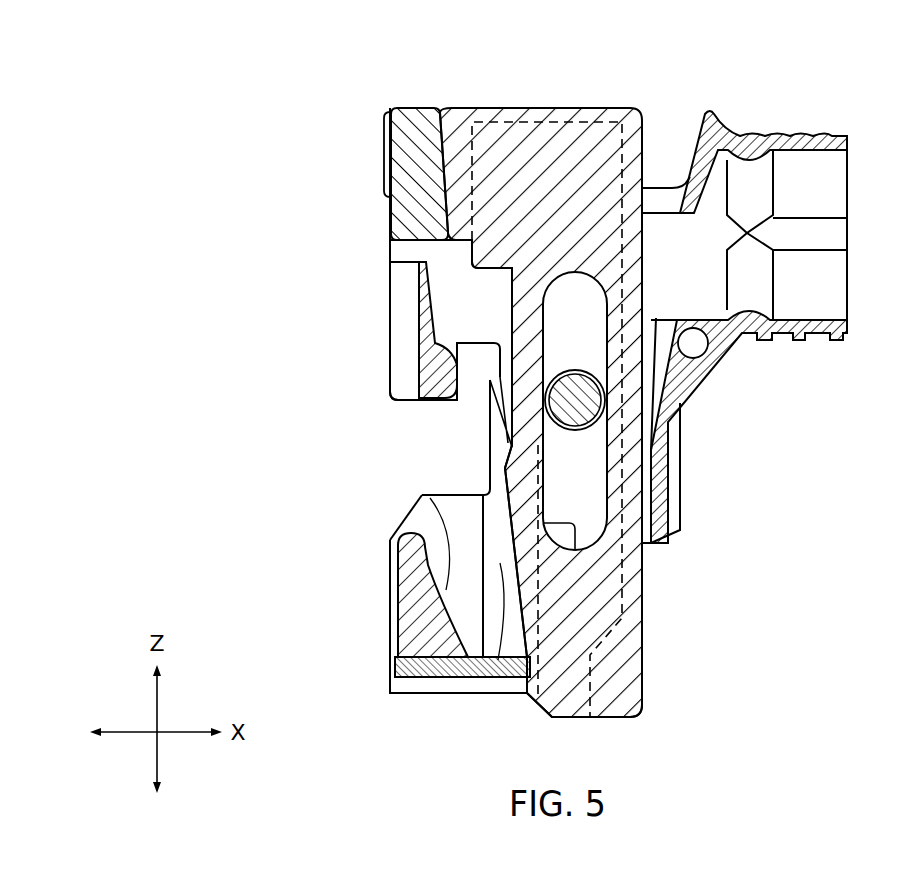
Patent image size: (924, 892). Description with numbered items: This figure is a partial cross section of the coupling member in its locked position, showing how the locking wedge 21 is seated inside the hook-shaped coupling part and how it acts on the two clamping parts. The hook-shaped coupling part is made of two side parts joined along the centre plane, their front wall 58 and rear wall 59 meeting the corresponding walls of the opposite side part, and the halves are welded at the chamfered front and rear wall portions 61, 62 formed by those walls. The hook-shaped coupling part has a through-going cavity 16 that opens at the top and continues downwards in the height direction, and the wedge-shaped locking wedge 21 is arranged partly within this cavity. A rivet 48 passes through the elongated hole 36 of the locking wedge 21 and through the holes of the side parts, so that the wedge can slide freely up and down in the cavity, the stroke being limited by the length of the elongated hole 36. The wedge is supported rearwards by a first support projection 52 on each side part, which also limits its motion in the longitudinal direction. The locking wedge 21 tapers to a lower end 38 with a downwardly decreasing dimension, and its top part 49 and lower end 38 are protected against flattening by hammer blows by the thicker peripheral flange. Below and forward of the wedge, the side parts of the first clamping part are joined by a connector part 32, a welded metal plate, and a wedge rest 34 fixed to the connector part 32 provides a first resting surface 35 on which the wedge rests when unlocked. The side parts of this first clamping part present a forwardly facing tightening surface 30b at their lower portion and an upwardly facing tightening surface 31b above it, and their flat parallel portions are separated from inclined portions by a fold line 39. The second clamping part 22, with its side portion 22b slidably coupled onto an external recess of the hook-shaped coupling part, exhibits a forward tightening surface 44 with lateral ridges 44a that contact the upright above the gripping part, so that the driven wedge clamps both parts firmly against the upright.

The through-going cavity 16 is at (744, 312).
The locking wedge 21 is at (483, 127).
The second clamping part 22 is at (412, 138).
The side portion 22b is at (498, 640).
The forwardly facing tightening surface 30b is at (387, 582).
The upwardly facing tightening surface 31b is at (462, 495).
The connector part 32 is at (395, 668).
The wedge rest 34 is at (423, 622).
The first resting surface 35 is at (422, 497).
The elongated hole 36 is at (588, 345).
The lower end 38 is at (608, 717).
The fold line 39 is at (447, 668).
The tightening surface 44 is at (390, 212).
The lateral ridges 44a is at (383, 163).
The rivet 48 is at (577, 422).
The top part 49 is at (515, 108).
The first support projection 52 is at (472, 252).
The front wall 58 is at (418, 312).
The rear wall 59 is at (690, 378).
The chamfered front wall portion 61 is at (402, 360).
The chamfered rear wall portion 62 is at (677, 507).